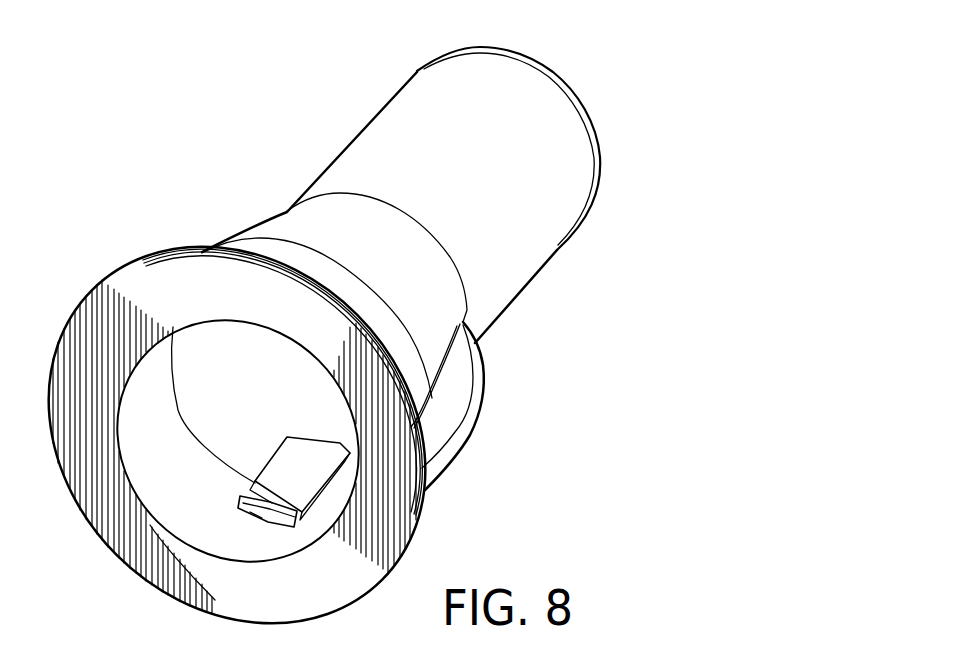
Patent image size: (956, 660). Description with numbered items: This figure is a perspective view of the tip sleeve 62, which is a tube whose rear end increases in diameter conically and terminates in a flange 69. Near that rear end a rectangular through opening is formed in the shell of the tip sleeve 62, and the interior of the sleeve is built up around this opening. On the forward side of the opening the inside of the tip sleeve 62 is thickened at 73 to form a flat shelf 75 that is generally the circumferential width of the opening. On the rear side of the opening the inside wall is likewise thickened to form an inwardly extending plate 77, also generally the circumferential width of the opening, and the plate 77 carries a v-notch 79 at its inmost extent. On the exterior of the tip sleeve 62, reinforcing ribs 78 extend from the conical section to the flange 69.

The tip sleeve 62 is at (488, 293).
The flange 69 is at (400, 528).
The thickened portion 73 is at (283, 458).
The flat shelf 75 is at (318, 478).
The plate 77 is at (243, 505).
The reinforcing ribs 78 is at (433, 442).
The v-notch 79 is at (258, 511).